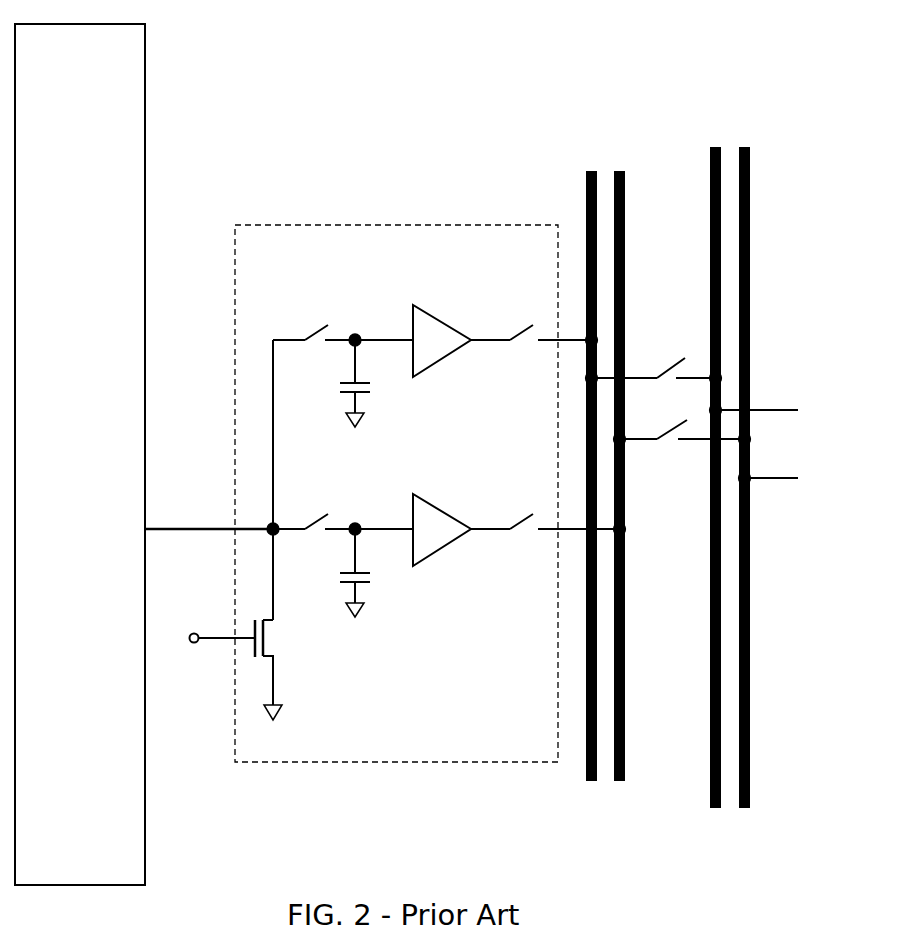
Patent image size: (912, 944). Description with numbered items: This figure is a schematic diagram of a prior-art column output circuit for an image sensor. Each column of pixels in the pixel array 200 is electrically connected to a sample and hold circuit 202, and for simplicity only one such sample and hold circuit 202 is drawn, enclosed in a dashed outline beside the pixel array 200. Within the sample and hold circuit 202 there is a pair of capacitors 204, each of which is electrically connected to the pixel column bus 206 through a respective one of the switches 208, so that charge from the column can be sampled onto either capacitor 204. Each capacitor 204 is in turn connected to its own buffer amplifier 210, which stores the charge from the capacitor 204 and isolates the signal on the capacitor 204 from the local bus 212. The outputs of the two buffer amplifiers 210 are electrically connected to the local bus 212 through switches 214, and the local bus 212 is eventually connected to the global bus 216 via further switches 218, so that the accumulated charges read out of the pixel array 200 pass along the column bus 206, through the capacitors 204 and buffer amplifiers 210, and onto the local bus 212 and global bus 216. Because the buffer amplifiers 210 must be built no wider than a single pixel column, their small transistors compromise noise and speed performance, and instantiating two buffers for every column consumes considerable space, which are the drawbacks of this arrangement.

The pixel array 200 is at (80, 454).
The sample and hold circuit 202 is at (320, 234).
The capacitor 204 is at (328, 386).
The pixel column bus 206 is at (206, 527).
The switch 208 is at (300, 328).
The buffer amplifier 210 is at (430, 301).
The local bus 212 is at (604, 168).
The switch 214 is at (522, 354).
The global bus 216 is at (728, 156).
The switch 218 is at (676, 358).